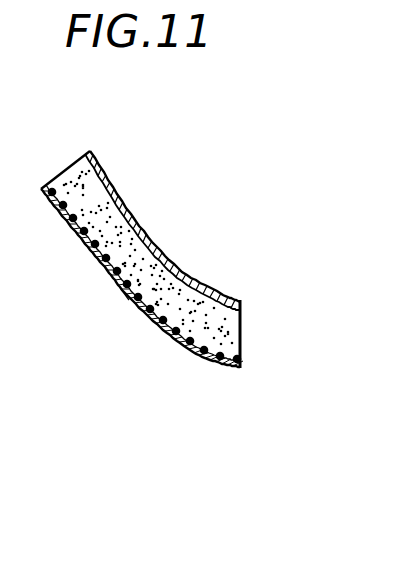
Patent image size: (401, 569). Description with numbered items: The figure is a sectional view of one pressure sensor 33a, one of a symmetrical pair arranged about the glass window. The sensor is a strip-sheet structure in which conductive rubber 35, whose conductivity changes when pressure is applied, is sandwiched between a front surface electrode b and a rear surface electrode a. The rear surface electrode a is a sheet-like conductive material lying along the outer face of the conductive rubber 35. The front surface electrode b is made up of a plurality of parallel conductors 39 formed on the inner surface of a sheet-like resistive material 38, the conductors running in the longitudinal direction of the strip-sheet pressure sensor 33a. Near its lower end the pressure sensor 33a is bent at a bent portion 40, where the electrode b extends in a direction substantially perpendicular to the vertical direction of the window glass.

The pressure sensor 33a is at (119, 185).
The conductive rubber 35 is at (65, 177).
The sheet-like resistive material 38 is at (165, 337).
The parallel conductors 39 is at (93, 257).
The bent portion 40 is at (222, 367).
The rear surface electrode a is at (185, 275).
The front surface electrode b is at (126, 296).